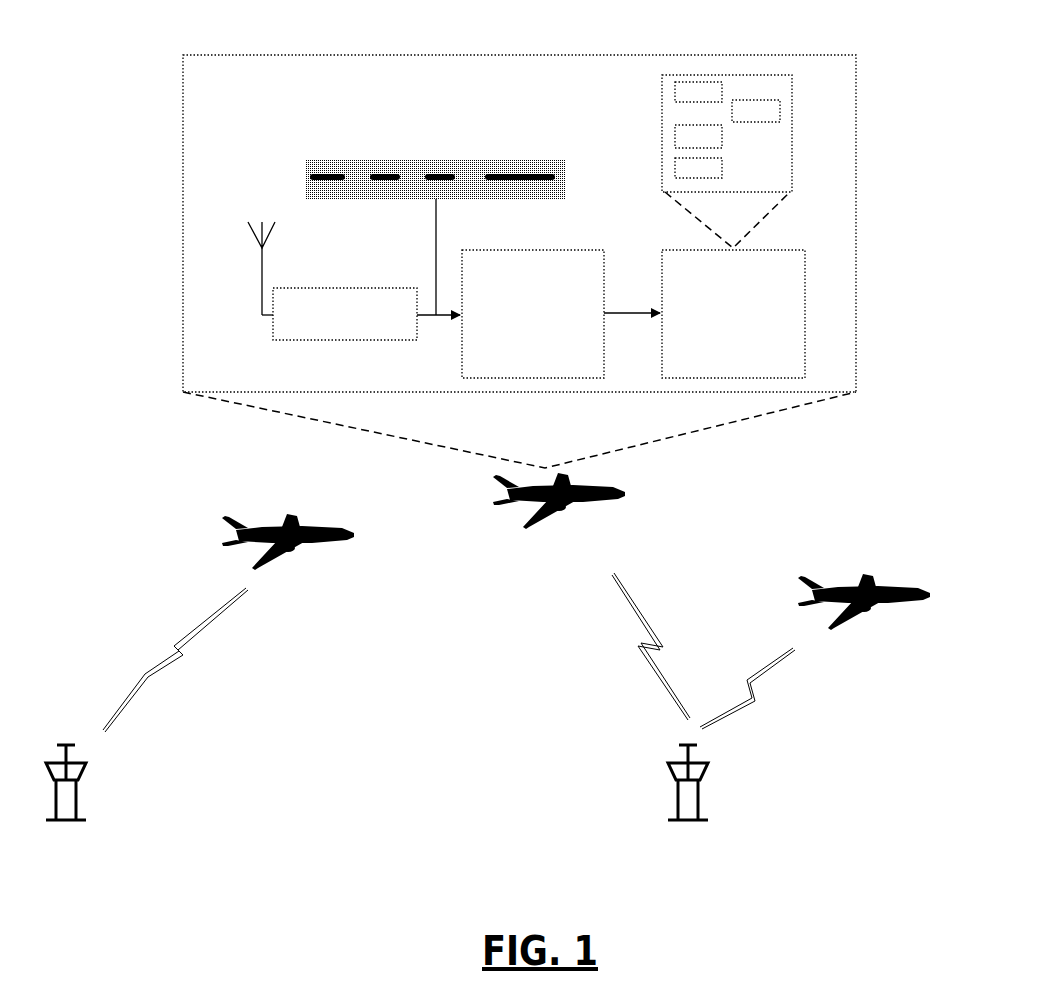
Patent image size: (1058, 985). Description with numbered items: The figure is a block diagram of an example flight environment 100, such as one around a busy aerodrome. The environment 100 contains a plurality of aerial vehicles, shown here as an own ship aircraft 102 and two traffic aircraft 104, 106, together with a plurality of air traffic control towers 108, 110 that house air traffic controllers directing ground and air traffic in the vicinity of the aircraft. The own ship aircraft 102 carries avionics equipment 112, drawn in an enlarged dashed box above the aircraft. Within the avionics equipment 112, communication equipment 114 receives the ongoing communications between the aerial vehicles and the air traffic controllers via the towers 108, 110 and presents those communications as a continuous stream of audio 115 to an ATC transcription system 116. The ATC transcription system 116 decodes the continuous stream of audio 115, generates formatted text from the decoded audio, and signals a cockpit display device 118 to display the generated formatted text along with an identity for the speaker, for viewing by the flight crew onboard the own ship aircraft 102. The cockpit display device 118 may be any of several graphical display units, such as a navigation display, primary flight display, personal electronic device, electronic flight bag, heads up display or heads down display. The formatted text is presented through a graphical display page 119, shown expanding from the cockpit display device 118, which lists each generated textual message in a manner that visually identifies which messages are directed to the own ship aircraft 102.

The flight environment 100 is at (890, 395).
The own ship aircraft 102 is at (615, 505).
The traffic aircraft 104 is at (325, 547).
The traffic aircraft 106 is at (891, 589).
The air traffic control tower 108 is at (82, 793).
The air traffic control tower 110 is at (676, 796).
The avionics equipment 112 is at (520, 55).
The communication equipment 114 is at (344, 288).
The continuous stream of audio 115 is at (435, 158).
The ATC transcription system 116 is at (561, 314).
The cockpit display device 118 is at (733, 314).
The graphical display page 119 is at (795, 130).